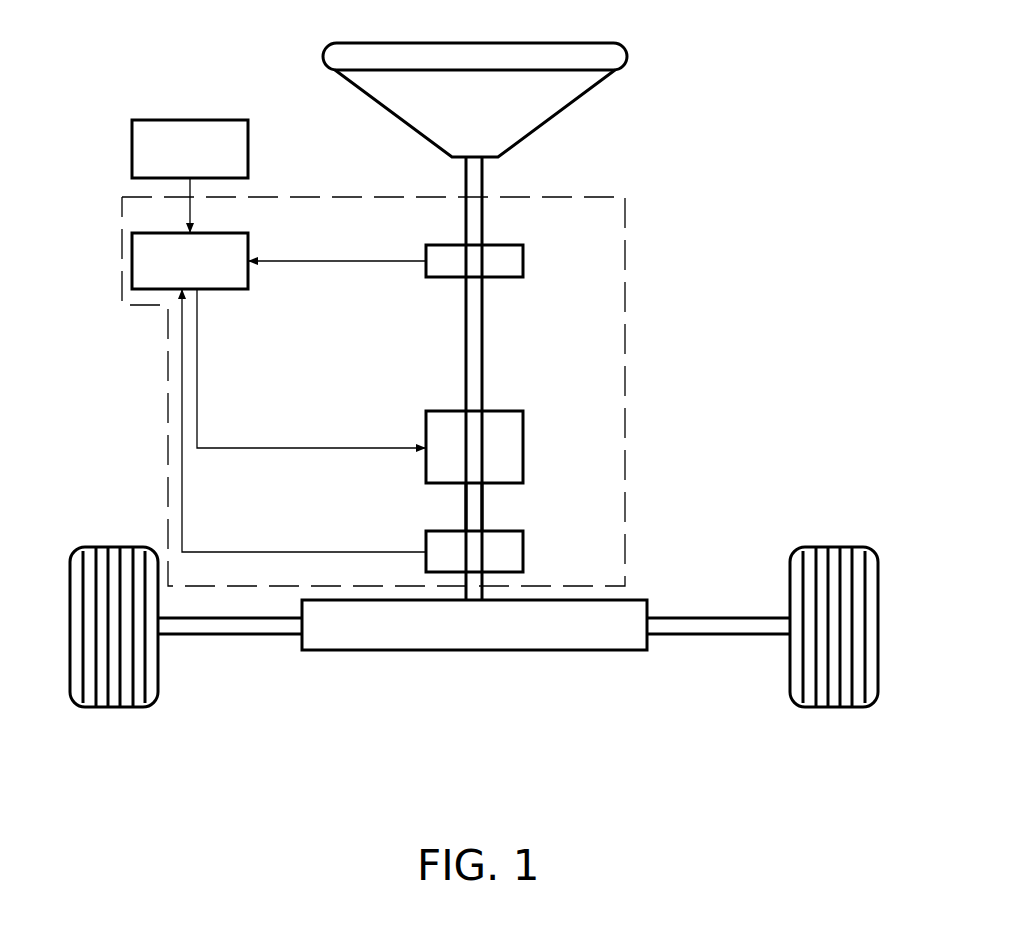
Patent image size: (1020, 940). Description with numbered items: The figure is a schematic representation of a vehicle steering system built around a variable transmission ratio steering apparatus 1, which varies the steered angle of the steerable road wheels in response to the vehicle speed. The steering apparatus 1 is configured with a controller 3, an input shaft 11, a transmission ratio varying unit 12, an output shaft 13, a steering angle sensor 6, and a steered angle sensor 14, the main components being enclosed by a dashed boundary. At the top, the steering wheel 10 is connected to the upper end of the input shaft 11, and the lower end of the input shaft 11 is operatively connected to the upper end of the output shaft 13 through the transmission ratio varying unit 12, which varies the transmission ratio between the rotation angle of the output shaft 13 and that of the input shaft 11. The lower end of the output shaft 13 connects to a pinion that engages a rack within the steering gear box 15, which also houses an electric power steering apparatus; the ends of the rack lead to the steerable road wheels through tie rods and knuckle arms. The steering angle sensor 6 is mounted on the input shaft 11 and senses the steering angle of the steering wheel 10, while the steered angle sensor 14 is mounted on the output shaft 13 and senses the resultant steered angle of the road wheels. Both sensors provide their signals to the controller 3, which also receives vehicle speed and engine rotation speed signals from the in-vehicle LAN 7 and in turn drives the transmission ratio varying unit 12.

The variable transmission ratio steering apparatus 1 is at (411, 391).
The controller 3 is at (214, 296).
The steering angle sensor 6 is at (511, 242).
The in-vehicle LAN 7 is at (165, 121).
The steering wheel 10 is at (519, 80).
The input shaft 11 is at (518, 378).
The transmission ratio varying unit 12 is at (518, 439).
The output shaft 13 is at (518, 500).
The steered angle sensor 14 is at (518, 535).
The steering gear box 15 is at (474, 666).